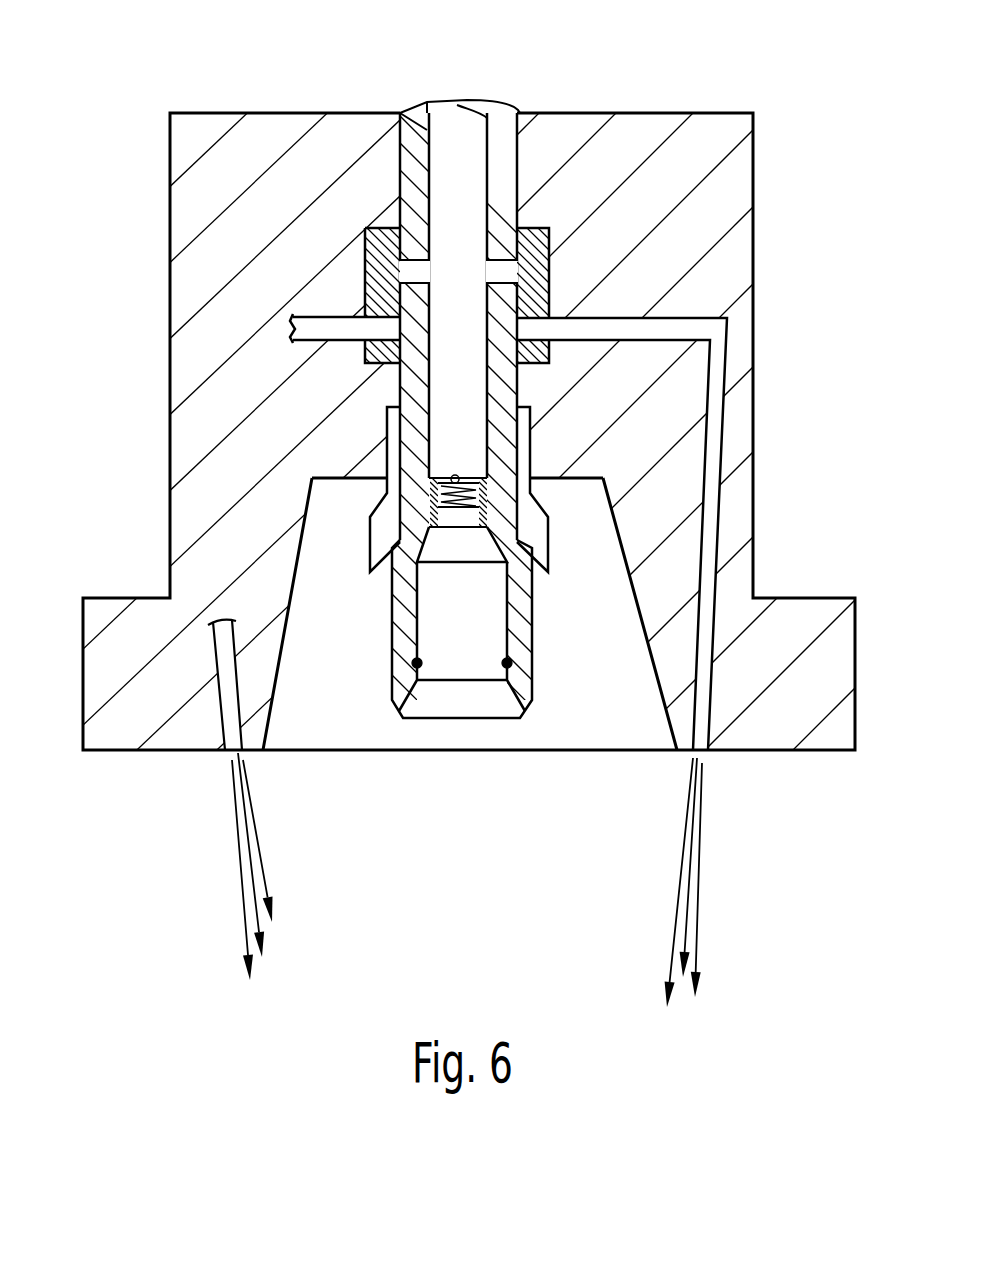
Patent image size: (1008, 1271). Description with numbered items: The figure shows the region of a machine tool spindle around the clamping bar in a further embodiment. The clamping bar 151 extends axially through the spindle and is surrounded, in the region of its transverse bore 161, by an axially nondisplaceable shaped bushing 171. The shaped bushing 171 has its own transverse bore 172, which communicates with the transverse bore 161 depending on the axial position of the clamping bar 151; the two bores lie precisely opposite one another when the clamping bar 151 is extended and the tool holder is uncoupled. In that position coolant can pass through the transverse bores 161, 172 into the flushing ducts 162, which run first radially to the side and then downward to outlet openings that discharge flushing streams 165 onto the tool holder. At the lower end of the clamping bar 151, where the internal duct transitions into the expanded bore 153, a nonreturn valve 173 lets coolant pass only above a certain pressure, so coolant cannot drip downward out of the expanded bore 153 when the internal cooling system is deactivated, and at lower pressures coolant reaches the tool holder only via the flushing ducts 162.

The clamping bar 151 is at (413, 187).
The expanded bore 153 is at (470, 665).
The transverse bore 161 is at (497, 273).
The flushing ducts 162 is at (687, 330).
The flushing streams 165 is at (688, 897).
The shaped bushing 171 is at (517, 213).
The transverse bore 172 is at (550, 322).
The nonreturn valve 173 is at (458, 472).